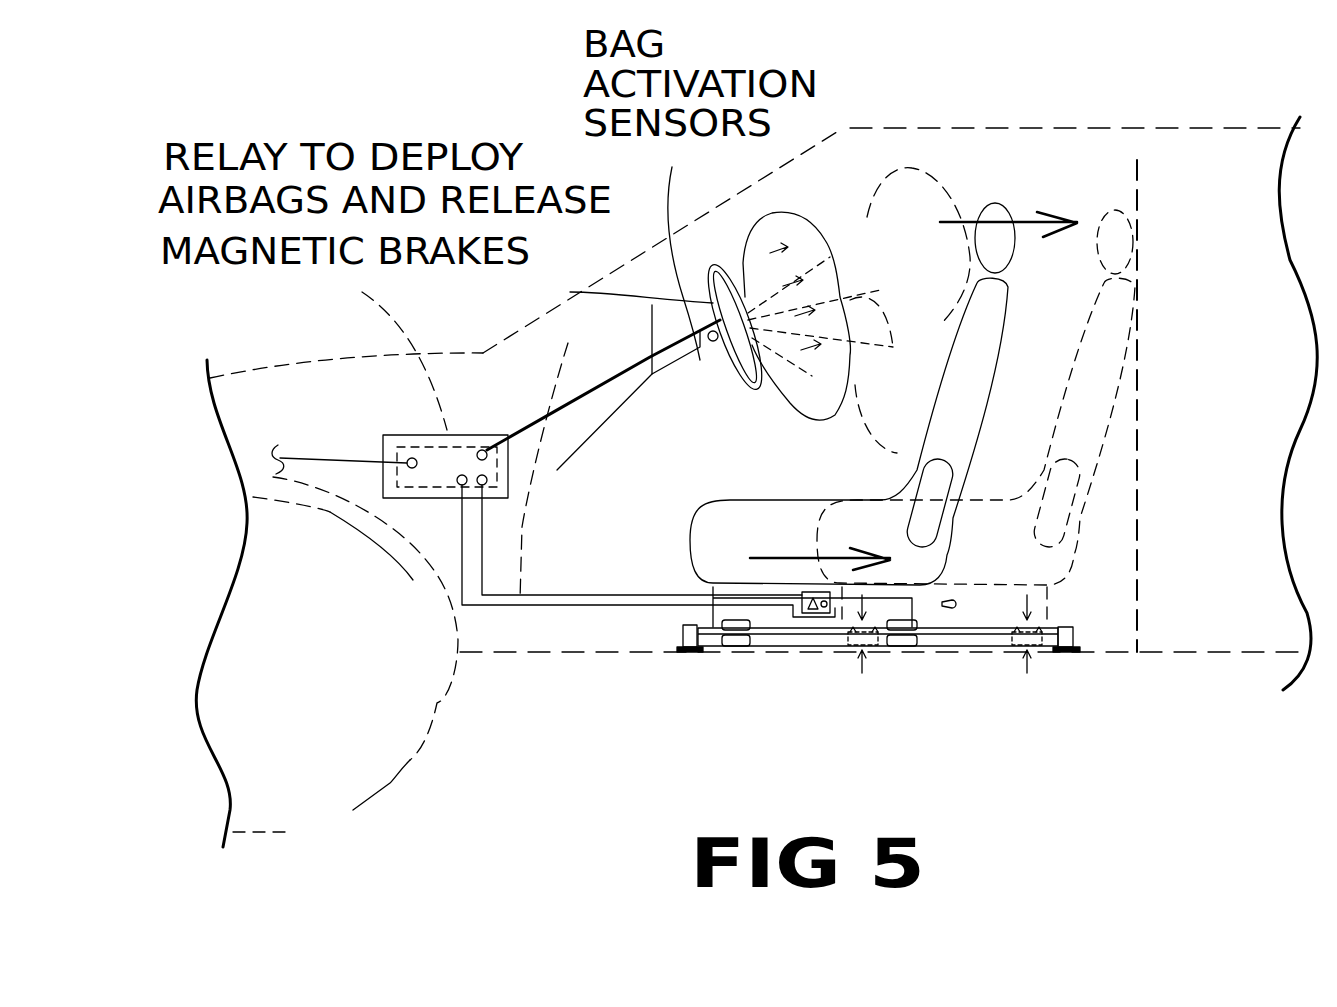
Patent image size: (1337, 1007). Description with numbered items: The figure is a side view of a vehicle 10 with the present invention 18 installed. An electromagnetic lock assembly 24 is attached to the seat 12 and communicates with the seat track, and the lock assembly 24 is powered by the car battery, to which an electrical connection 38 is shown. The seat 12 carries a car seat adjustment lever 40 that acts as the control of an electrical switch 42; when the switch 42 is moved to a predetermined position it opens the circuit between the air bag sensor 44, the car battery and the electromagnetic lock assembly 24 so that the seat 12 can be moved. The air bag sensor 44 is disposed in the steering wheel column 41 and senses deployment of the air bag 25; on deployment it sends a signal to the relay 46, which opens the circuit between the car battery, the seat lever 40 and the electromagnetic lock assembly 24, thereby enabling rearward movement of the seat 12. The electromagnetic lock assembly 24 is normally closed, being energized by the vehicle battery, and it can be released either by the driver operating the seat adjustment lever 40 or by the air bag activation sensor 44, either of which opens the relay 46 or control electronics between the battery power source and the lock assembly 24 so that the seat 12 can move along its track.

The vehicle 10 is at (995, 155).
The seat 12 is at (1120, 238).
The present invention 18 is at (588, 742).
The electromagnetic lock assembly 24 is at (740, 640).
The air bag 25 is at (783, 230).
The electrical connection 38 is at (320, 457).
The car seat adjustment lever 40 is at (820, 600).
The steering wheel column 41 is at (663, 362).
The electrical switch 42 is at (812, 597).
The air bag sensor 44 is at (700, 360).
The relay 46 is at (393, 447).